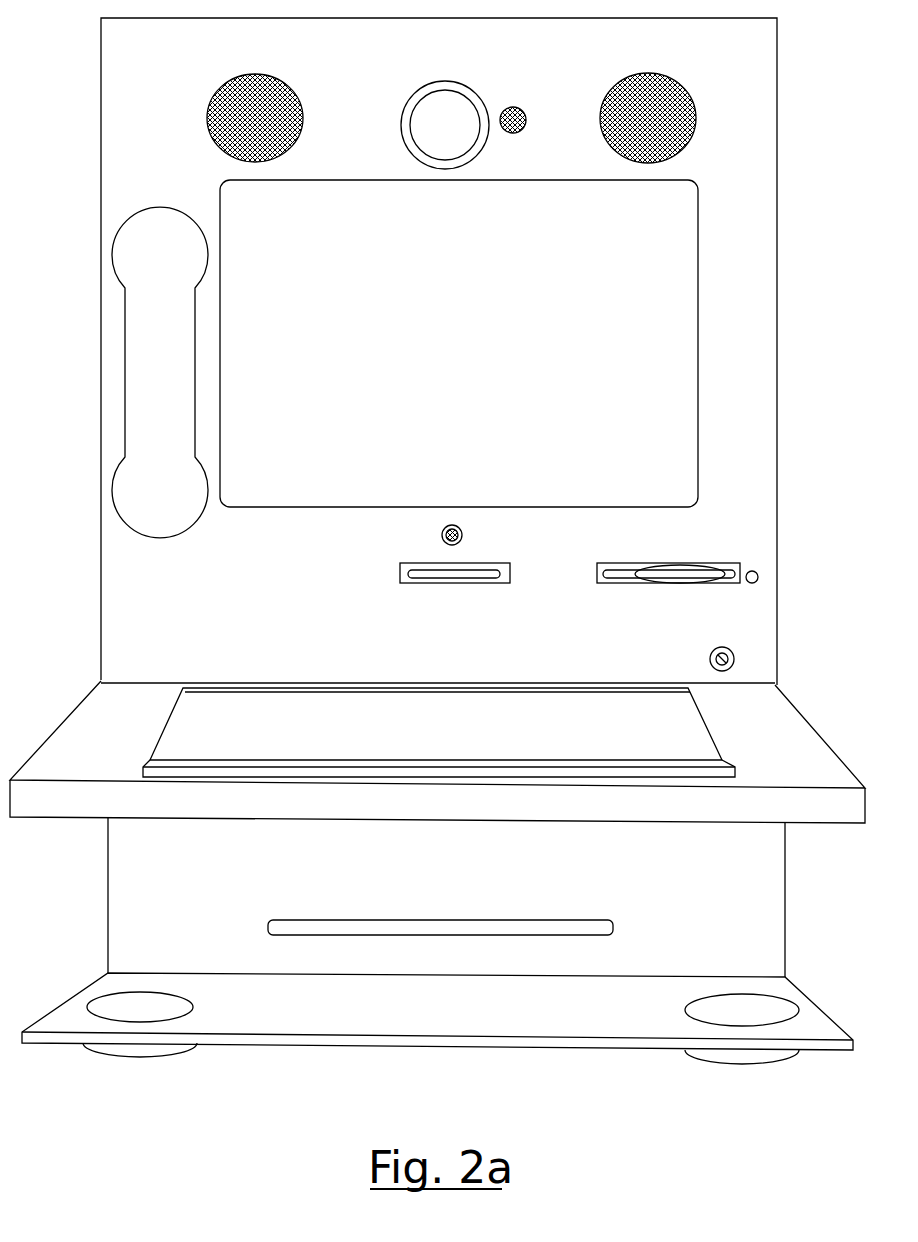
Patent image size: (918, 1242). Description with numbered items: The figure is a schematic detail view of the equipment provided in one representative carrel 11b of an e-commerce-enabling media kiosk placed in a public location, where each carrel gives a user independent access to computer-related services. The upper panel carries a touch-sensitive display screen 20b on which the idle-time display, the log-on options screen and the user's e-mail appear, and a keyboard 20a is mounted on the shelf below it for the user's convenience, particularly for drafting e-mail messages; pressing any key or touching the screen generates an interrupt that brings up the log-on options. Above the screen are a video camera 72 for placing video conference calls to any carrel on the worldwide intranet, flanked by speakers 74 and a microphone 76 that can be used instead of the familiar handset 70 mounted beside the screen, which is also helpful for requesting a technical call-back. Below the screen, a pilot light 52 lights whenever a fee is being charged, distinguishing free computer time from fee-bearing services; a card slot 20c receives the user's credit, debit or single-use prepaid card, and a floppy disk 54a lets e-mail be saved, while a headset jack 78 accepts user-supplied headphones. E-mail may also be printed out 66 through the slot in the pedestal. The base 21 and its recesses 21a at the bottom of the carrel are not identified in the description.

The carrel 11b is at (145, 860).
The base 21 is at (452, 1012).
The base foot recess 21a is at (172, 1013).
The printer 66 is at (517, 930).
The keyboard 20a is at (303, 726).
The display screen 20b is at (291, 483).
The handset 70 is at (175, 493).
The speakers 74 is at (285, 135).
The video camera 72 is at (430, 118).
The microphone 76 is at (522, 130).
The pilot light 52 is at (440, 533).
The card slot 20c is at (425, 577).
The floppy disk 54a is at (680, 577).
The headset jack 78 is at (712, 652).